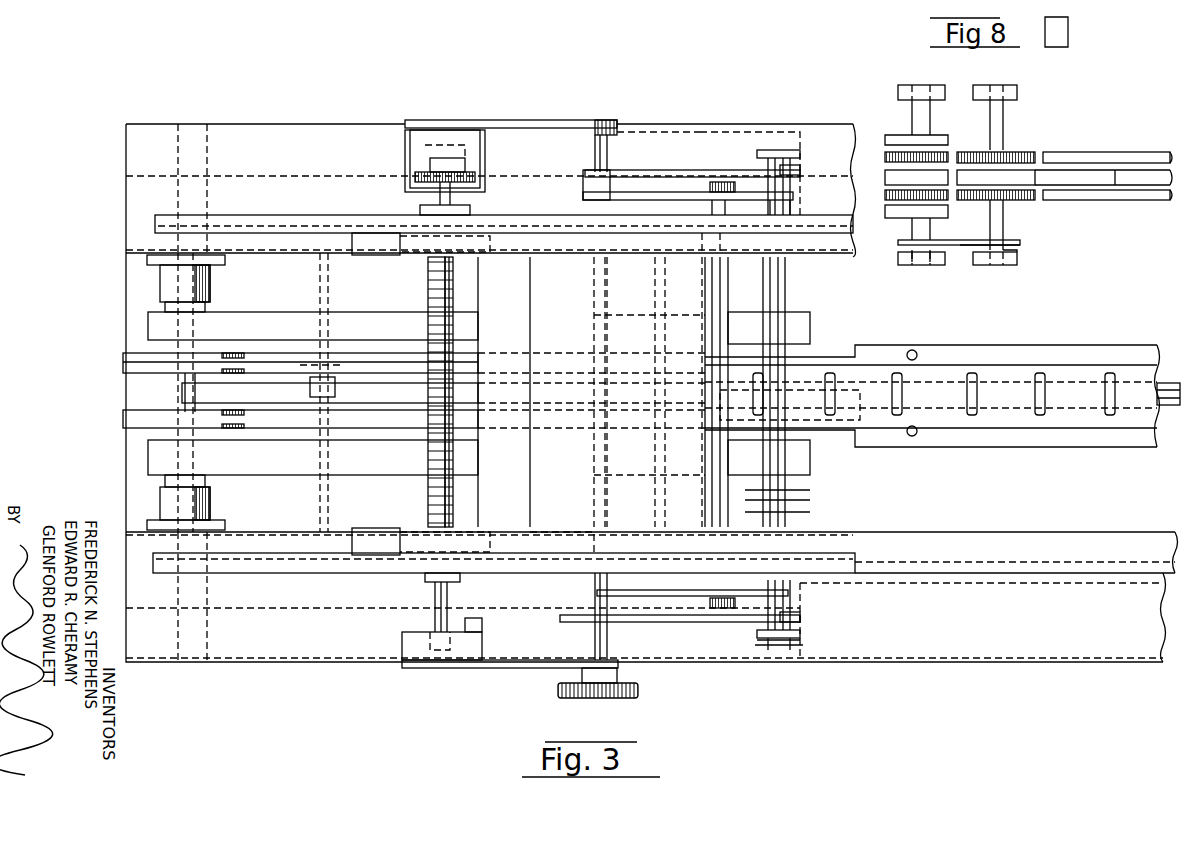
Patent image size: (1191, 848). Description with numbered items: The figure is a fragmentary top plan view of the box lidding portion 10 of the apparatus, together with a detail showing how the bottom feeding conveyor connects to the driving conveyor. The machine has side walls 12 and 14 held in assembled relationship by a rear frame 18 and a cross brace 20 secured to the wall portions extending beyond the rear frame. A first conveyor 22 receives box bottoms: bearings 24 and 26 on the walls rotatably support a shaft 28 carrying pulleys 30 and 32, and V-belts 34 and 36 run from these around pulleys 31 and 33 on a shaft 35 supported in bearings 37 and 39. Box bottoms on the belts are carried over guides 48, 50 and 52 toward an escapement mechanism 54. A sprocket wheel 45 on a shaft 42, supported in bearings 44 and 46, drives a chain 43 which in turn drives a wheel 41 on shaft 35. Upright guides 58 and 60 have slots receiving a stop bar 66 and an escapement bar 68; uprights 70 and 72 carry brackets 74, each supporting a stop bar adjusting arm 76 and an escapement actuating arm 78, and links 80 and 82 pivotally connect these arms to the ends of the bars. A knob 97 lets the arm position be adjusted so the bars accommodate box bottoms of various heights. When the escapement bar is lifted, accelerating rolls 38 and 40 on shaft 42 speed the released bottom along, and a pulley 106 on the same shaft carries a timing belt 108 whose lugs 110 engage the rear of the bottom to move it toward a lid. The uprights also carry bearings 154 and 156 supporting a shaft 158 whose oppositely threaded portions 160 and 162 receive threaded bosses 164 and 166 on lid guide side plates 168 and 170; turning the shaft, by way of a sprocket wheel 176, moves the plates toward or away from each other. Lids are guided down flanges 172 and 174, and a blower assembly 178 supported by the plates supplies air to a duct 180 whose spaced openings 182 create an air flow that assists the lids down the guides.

In FIG. 3, the box lidding portion 10 is at (886, 699).
In FIG. 3, the side wall 12 is at (853, 124).
In FIG. 3, the side wall 14 is at (935, 662).
In FIG. 3, the rear frame 18 is at (845, 600).
In FIG. 3, the cross brace 20 is at (126, 208).
In FIG. 3, the first conveyor 22 is at (84, 376).
In FIG. 3, the bearing 24 is at (160, 283).
In FIG. 3, the bearing 26 is at (212, 505).
In FIG. 3, the shaft 28 is at (182, 392).
In FIG. 3, the pulley 30 is at (123, 358).
In FIG. 8, the pulley 31 is at (940, 170).
In FIG. 3, the pulley 32 is at (123, 428).
In FIG. 8, the pulley 33 is at (948, 208).
In FIG. 3, the V-belt 34 is at (287, 355).
In FIG. 8, the V-belt 34 is at (885, 158).
In FIG. 8, the shaft 35 is at (912, 228).
In FIG. 3, the V-belt 36 is at (282, 430).
In FIG. 8, the V-belt 36 is at (885, 196).
In FIG. 8, the bearing 37 is at (938, 95).
In FIG. 3, the accelerating roll 38 is at (822, 352).
In FIG. 8, the accelerating roll 38 is at (1030, 152).
In FIG. 8, the bearing 39 is at (940, 265).
In FIG. 3, the accelerating roll 40 is at (820, 432).
In FIG. 8, the accelerating roll 40 is at (1015, 200).
In FIG. 8, the wheel 41 is at (898, 244).
In FIG. 3, the shaft 42 is at (782, 308).
In FIG. 8, the shaft 42 is at (1003, 130).
In FIG. 8, the chain 43 is at (960, 248).
In FIG. 3, the bearing 44 is at (748, 242).
In FIG. 8, the bearing 44 is at (1017, 92).
In FIG. 8, the sprocket wheel 45 is at (1017, 250).
In FIG. 3, the bearing 46 is at (748, 541).
In FIG. 8, the bearing 46 is at (1013, 266).
In FIG. 3, the guide 48 is at (392, 316).
In FIG. 8, the guide 48 is at (926, 135).
In FIG. 3, the guide 50 is at (358, 385).
In FIG. 8, the guide 50 is at (912, 140).
In FIG. 3, the guide 52 is at (292, 476).
In FIG. 3, the escapement mechanism 54 is at (718, 685).
In FIG. 3, the upright guide 58 is at (800, 150).
In FIG. 3, the upright guide 60 is at (790, 645).
In FIG. 3, the stop bar 66 is at (770, 520).
In FIG. 3, the escapement bar 68 is at (790, 495).
In FIG. 3, the upright 70 is at (485, 130).
In FIG. 3, the upright 72 is at (405, 660).
In FIG. 3, the bracket 74 is at (585, 120).
In FIG. 3, the stop bar adjusting arm 76 is at (745, 192).
In FIG. 3, the escapement actuating arm 78 is at (672, 170).
In FIG. 3, the link 80 is at (800, 165).
In FIG. 3, the link 82 is at (800, 195).
In FIG. 3, the knob 97 is at (612, 698).
In FIG. 8, the pulley 106 is at (1038, 185).
In FIG. 3, the timing belt 108 is at (1160, 425).
In FIG. 8, the timing belt 108 is at (1100, 170).
In FIG. 8, the lug 110 is at (1108, 200).
In FIG. 3, the bearing 154 is at (455, 148).
In FIG. 3, the bearing 156 is at (445, 650).
In FIG. 3, the shaft 158 is at (450, 605).
In FIG. 3, the threaded portion 160 is at (455, 340).
In FIG. 3, the threaded portion 162 is at (455, 440).
In FIG. 3, the threaded boss 164 is at (480, 240).
In FIG. 3, the threaded boss 166 is at (484, 528).
In FIG. 3, the lid guide side plate 168 is at (352, 216).
In FIG. 3, the lid guide side plate 170 is at (365, 552).
In FIG. 3, the flange 172 is at (566, 257).
In FIG. 3, the flange 174 is at (548, 532).
In FIG. 3, the sprocket wheel 176 is at (483, 165).
In FIG. 3, the blower assembly 178 is at (697, 341).
In FIG. 3, the duct 180 is at (1018, 447).
In FIG. 3, the opening 182 is at (963, 447).